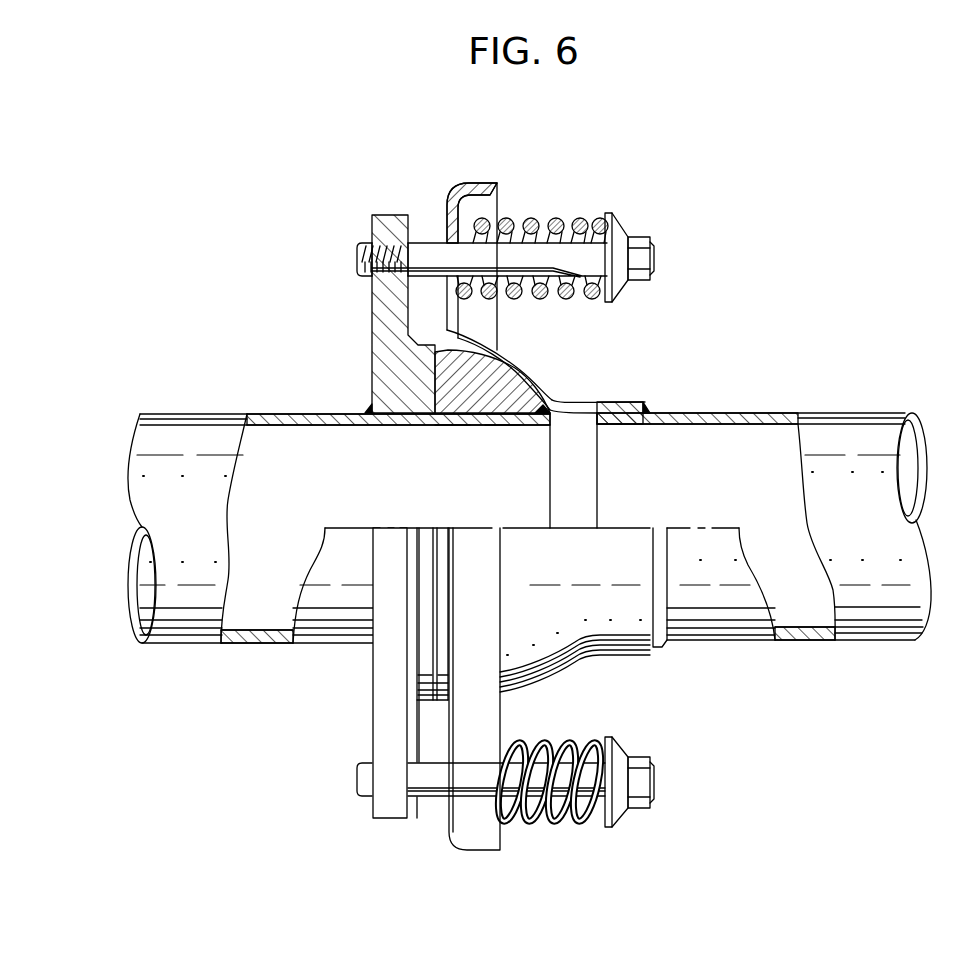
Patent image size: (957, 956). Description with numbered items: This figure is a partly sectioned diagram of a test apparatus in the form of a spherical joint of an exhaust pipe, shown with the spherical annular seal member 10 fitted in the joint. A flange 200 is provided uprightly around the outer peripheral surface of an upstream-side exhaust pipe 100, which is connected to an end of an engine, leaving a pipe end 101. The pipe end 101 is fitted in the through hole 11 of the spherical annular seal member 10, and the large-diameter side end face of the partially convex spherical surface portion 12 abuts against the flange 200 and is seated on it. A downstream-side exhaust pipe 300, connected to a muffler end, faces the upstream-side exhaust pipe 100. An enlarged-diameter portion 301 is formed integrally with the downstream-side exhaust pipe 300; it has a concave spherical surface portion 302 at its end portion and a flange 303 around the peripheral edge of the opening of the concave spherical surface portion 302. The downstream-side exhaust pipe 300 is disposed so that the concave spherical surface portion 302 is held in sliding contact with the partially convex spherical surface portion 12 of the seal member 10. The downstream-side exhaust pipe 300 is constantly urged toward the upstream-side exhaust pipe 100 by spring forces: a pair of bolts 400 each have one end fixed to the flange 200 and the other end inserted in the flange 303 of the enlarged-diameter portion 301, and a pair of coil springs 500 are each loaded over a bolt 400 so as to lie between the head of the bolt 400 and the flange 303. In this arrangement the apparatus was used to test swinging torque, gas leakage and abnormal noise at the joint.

The upstream-side exhaust pipe 100 is at (183, 413).
The downstream-side exhaust pipe 300 is at (778, 414).
The spherical annular seal member 10 is at (450, 368).
The pipe end 101 is at (450, 415).
The through hole 11 is at (500, 415).
The partially convex spherical surface portion 12 is at (525, 363).
The flange 200 is at (372, 296).
The enlarged-diameter portion 301 is at (547, 373).
The concave spherical surface portion 302 is at (548, 377).
The flange 303 is at (455, 184).
The bolt 400 is at (522, 250).
The coil spring 500 is at (556, 213).